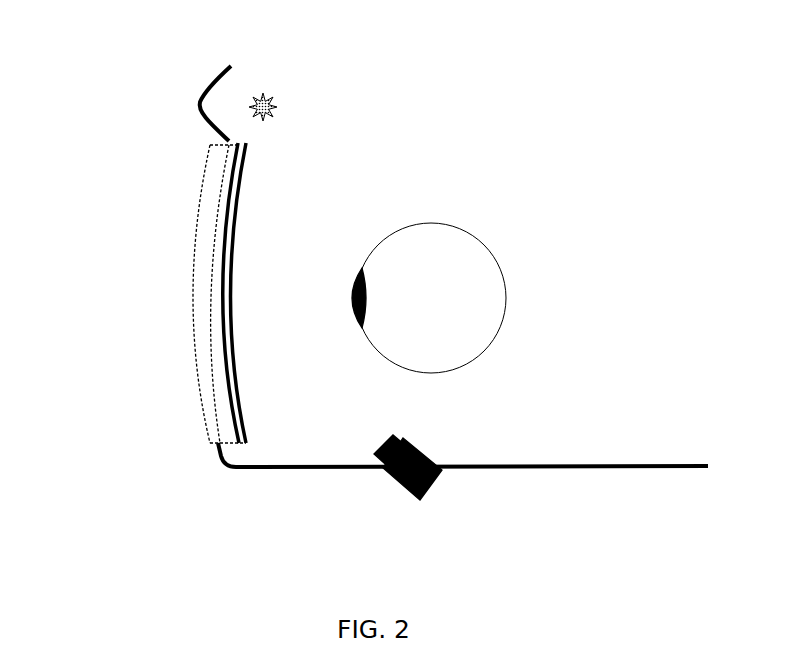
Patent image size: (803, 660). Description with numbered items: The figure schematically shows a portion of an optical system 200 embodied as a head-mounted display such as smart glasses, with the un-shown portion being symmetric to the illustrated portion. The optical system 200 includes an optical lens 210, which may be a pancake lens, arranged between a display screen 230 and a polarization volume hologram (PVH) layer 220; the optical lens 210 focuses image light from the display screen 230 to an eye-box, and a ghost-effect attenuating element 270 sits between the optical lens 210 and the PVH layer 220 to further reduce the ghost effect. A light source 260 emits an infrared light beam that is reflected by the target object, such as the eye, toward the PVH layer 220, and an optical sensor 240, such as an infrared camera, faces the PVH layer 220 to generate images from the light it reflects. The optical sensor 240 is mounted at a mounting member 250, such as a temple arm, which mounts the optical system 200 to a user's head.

The optical system 200 is at (240, 22).
The optical lens 210 is at (213, 255).
The polarization volume hologram (PVH) layer 220 is at (238, 223).
The display screen 230 is at (198, 310).
The optical sensor 240 is at (430, 490).
The mounting member 250 is at (272, 470).
The light source 260 is at (277, 96).
The ghost-effect attenuating element 270 is at (229, 198).